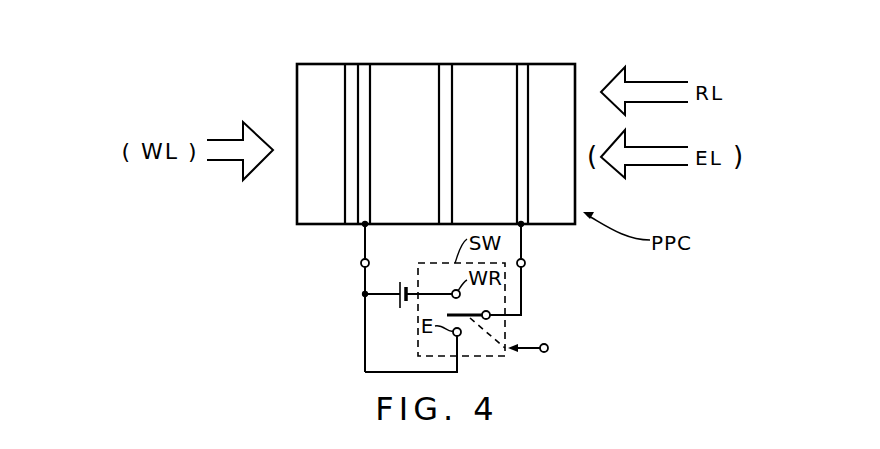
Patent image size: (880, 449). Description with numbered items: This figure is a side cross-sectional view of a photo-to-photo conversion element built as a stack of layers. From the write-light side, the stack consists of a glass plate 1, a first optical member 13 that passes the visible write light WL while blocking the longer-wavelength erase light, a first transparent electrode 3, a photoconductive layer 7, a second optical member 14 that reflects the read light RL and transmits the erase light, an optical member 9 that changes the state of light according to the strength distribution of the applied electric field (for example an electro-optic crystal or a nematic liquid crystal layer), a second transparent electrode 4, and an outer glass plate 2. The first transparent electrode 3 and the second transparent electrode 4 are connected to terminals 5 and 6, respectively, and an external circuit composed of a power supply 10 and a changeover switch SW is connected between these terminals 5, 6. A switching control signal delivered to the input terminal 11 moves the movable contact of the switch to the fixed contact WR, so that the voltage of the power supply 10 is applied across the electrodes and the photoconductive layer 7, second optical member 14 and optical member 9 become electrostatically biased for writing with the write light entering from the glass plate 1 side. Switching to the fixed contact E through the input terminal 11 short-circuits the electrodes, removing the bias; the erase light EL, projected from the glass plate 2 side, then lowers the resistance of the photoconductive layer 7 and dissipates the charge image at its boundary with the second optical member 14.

The glass plate 1 is at (310, 72).
The first optical member 13 is at (352, 72).
The first transparent electrode 3 is at (366, 72).
The photoconductive layer 7 is at (406, 72).
The second optical member 14 is at (445, 72).
The optical member 9 is at (492, 72).
The second transparent electrode 4 is at (523, 70).
The glass plate 2 is at (560, 70).
The terminal 5 is at (361, 262).
The terminal 6 is at (525, 263).
The power supply 10 is at (399, 282).
The input terminal 11 is at (548, 348).